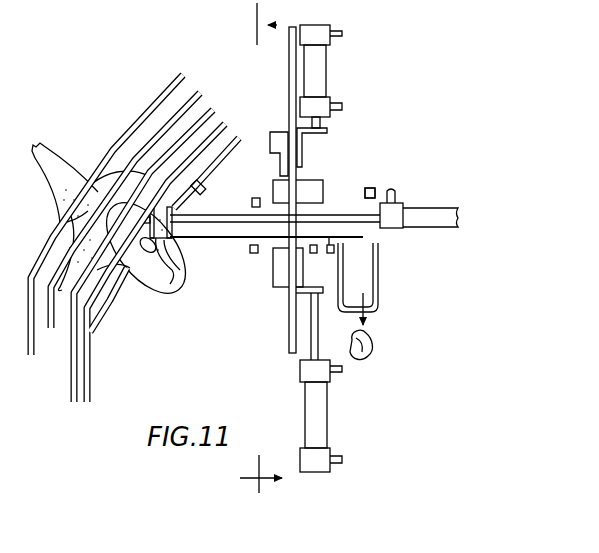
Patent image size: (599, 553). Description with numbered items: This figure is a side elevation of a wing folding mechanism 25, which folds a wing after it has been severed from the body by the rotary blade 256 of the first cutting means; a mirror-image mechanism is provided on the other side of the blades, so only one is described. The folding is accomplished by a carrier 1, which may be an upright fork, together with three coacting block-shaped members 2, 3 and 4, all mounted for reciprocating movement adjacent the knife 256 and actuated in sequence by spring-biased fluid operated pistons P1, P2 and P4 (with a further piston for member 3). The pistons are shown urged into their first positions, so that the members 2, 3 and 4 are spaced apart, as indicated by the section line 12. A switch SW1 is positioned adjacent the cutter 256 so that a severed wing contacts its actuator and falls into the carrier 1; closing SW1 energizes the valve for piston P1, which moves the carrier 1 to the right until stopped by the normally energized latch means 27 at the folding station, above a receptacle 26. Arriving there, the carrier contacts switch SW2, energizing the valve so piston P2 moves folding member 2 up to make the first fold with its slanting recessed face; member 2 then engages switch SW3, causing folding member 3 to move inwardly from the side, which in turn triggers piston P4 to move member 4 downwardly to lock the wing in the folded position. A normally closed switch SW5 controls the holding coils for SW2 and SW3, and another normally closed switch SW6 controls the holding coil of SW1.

The carrier 1 is at (146, 226).
The folding member 2 is at (282, 263).
The folding member 3 is at (313, 189).
The member 4 is at (280, 139).
The section line 12 is at (257, 252).
The wing folding mechanism 25 is at (379, 146).
The receptacle 26 is at (380, 294).
The latch means 27 is at (378, 252).
The rotary blade 256 is at (168, 280).
The fluid operated piston P1 is at (420, 215).
The fluid operated piston P2 is at (323, 419).
The fluid operated piston P4 is at (322, 76).
The switch SW1 is at (208, 184).
The switch SW2 is at (311, 254).
The switch SW3 is at (250, 250).
The switch SW5 is at (252, 203).
The switch SW6 is at (375, 180).